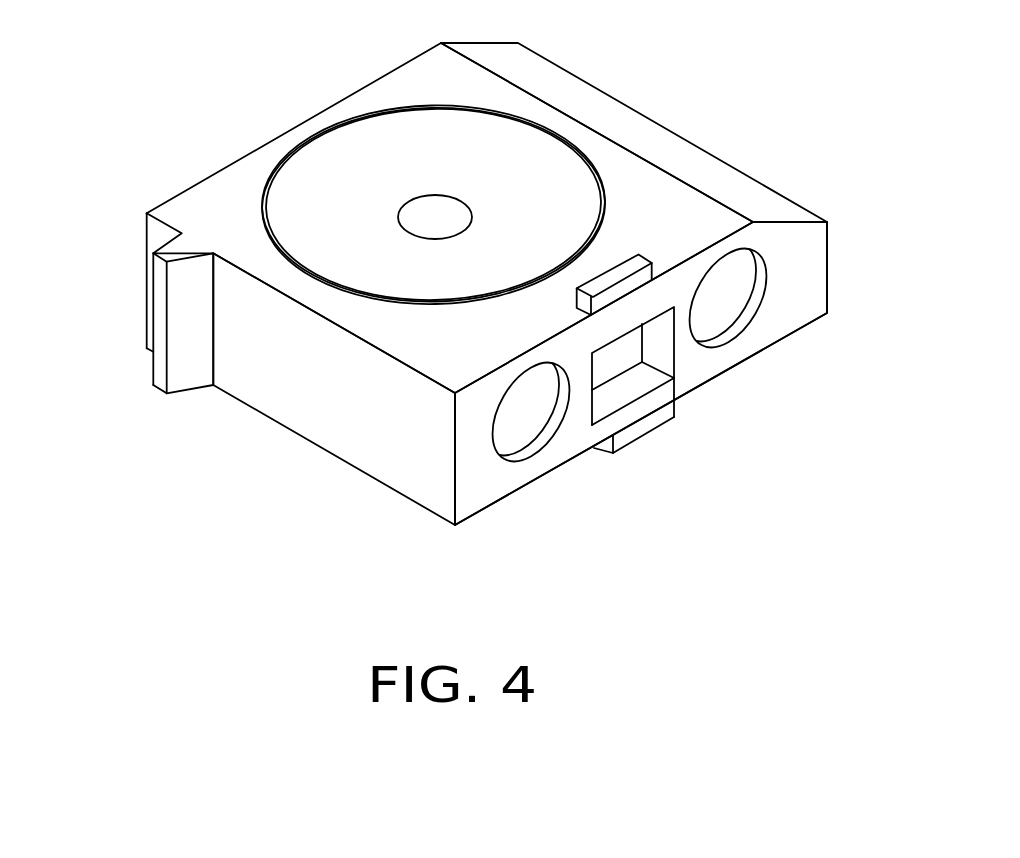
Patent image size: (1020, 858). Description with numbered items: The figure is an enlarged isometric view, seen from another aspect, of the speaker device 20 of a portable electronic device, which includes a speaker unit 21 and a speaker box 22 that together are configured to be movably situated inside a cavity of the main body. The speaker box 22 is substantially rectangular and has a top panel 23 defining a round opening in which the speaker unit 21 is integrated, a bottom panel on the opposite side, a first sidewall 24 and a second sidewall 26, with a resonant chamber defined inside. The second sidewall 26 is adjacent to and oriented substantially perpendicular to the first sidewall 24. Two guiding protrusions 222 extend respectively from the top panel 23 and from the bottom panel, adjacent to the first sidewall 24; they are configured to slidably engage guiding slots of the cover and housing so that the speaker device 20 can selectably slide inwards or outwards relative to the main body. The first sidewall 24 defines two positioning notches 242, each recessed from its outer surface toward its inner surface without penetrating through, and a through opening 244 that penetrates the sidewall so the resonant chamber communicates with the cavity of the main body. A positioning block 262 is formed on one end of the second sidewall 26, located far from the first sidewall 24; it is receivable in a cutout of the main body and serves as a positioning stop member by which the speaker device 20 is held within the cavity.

The speaker device 20 is at (254, 40).
The speaker unit 21 is at (360, 148).
The speaker box 22 is at (222, 195).
The top panel 23 is at (623, 180).
The guiding protrusion 222 is at (613, 274).
The first sidewall 24 is at (578, 427).
The positioning notch 242 is at (733, 307).
The through opening 244 is at (617, 361).
The second sidewall 26 is at (317, 392).
The positioning block 262 is at (162, 358).